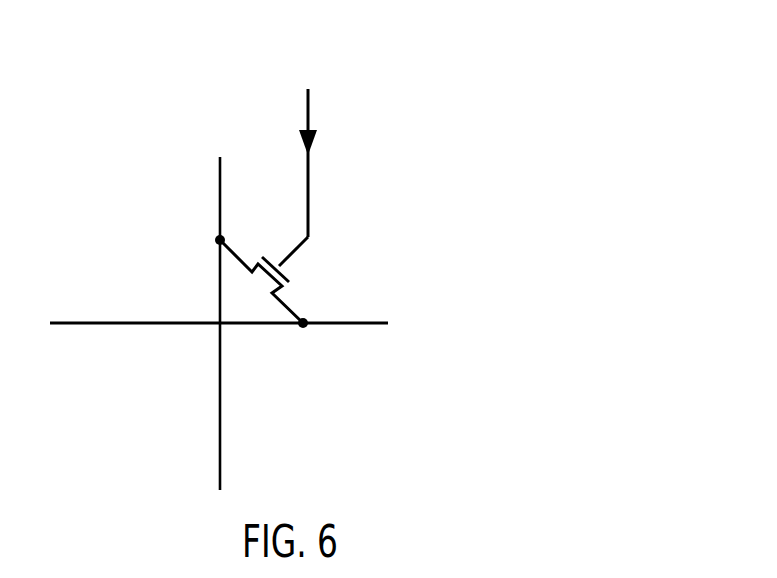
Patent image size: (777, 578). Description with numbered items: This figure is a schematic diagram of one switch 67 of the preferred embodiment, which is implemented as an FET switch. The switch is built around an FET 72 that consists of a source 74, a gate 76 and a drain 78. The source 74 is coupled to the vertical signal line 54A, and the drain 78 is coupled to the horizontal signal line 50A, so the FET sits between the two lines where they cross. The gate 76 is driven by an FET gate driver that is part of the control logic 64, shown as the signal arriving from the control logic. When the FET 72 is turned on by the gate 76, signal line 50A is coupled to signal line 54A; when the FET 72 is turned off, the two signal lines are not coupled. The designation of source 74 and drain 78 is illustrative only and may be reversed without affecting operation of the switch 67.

The signal line 50A is at (219, 305).
The signal line 54A is at (246, 323).
The control logic 64 is at (308, 124).
The switch 67 is at (482, 161).
The FET 72 is at (266, 245).
The source 74 is at (202, 243).
The gate 76 is at (298, 259).
The drain 78 is at (315, 311).